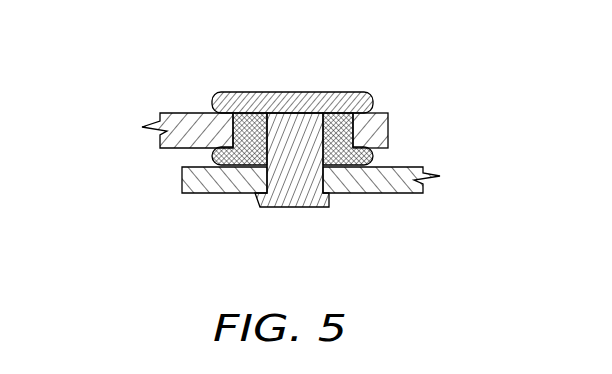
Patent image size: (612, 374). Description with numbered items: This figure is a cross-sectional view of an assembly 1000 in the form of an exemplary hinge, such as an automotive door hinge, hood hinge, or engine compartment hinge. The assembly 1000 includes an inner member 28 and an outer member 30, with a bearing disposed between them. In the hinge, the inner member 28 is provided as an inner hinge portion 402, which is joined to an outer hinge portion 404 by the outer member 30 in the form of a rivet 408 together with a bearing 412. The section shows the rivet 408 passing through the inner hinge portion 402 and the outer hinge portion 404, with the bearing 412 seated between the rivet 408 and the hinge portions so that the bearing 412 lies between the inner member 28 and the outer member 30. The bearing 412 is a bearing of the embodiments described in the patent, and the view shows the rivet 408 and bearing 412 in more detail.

The assembly 1000 is at (383, 56).
The outer member 30 is at (153, 109).
The inner hinge portion 402 is at (183, 113).
The outer hinge portion 404 is at (403, 165).
The bearing 412 is at (212, 155).
The inner member 28 is at (267, 172).
The rivet 408 is at (270, 208).